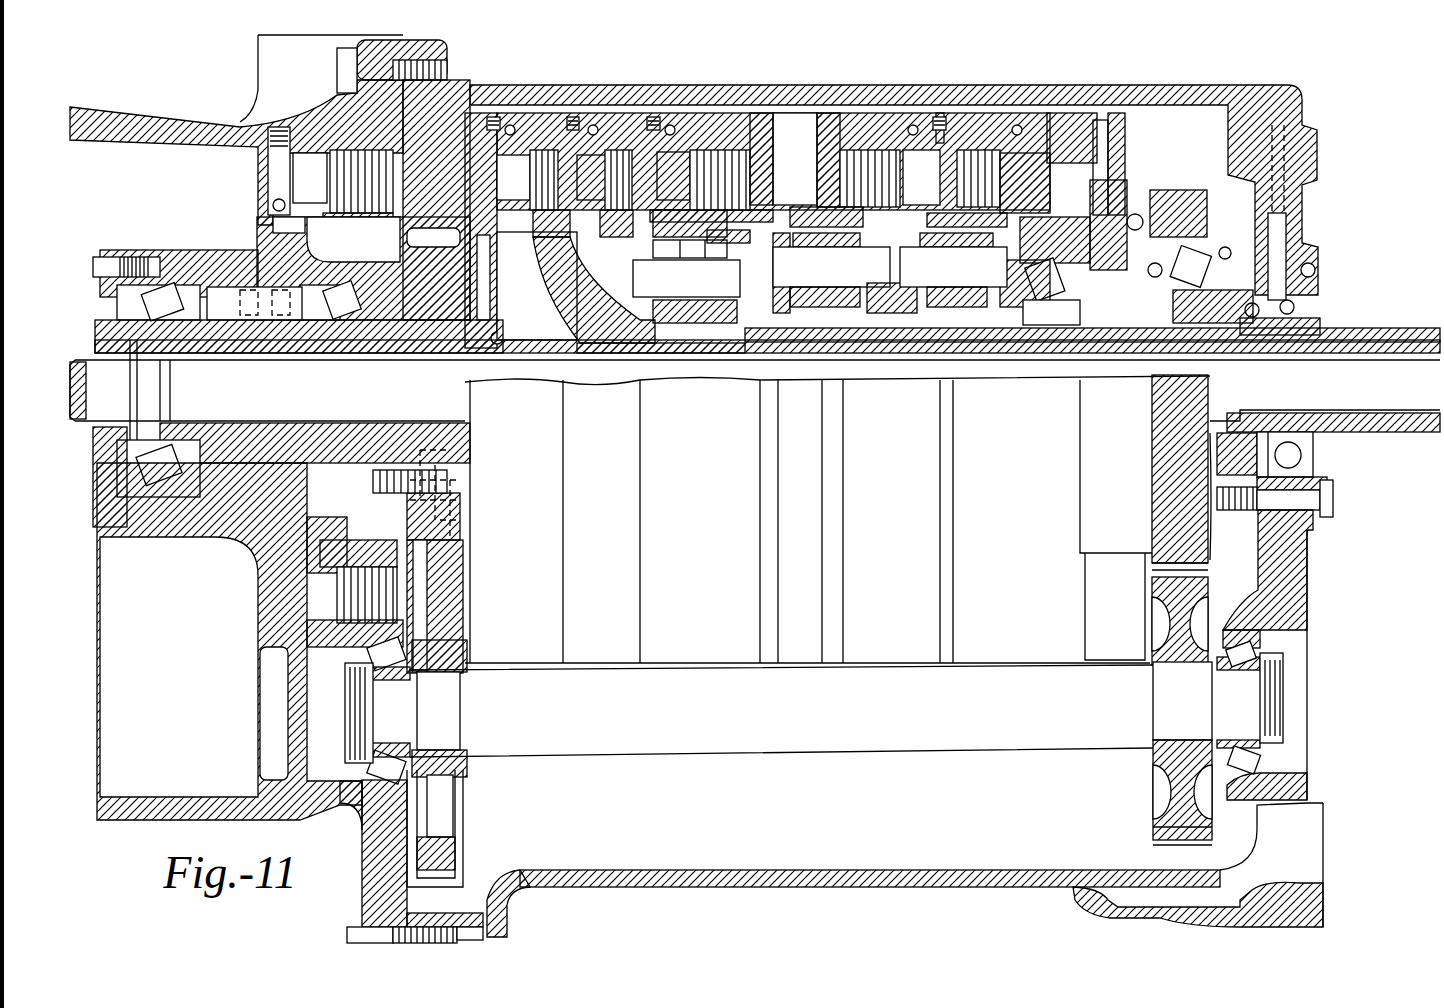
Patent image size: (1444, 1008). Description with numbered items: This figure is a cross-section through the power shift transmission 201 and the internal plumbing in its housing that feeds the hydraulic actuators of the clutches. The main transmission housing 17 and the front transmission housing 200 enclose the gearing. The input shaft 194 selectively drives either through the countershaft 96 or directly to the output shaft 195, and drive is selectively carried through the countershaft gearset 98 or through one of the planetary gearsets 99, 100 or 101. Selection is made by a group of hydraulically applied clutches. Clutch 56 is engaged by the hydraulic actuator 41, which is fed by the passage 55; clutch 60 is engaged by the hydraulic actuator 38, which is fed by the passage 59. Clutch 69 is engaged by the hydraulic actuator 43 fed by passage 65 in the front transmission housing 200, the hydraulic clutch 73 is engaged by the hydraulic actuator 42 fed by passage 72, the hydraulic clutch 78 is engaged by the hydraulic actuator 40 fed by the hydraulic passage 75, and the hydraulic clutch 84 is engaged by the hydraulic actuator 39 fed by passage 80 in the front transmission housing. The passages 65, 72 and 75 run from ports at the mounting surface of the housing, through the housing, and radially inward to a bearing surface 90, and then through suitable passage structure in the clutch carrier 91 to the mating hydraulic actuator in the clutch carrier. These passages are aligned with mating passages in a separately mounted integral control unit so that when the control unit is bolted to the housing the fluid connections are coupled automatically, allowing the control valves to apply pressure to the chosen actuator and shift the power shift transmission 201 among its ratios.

The main transmission housing 17 is at (1322, 905).
The hydraulic actuator 38 is at (1106, 260).
The hydraulic actuator 39 is at (266, 178).
The hydraulic actuator 40 is at (690, 142).
The hydraulic actuator 41 is at (873, 140).
The hydraulic actuator 42 is at (597, 207).
The hydraulic actuator 43 is at (520, 214).
The passage 55 is at (945, 140).
The clutch 56 is at (875, 143).
The passage 59 is at (1105, 160).
The clutch 60 is at (981, 133).
The passage 65 is at (207, 290).
The clutch 69 is at (548, 228).
The passage 72 is at (227, 290).
The hydraulic clutch 73 is at (621, 232).
The hydraulic passage 75 is at (290, 296).
The hydraulic clutch 78 is at (764, 163).
The passage 80 is at (278, 128).
The hydraulic clutch 84 is at (330, 150).
The bearing surface 90 is at (253, 440).
The clutch carrier 91 is at (724, 117).
The countershaft 96 is at (582, 750).
The countershaft gearset 98 is at (478, 565).
The planetary gearset 99 is at (690, 362).
The planetary gearset 100 is at (832, 345).
The planetary gearset 101 is at (975, 345).
The input shaft 194 is at (318, 407).
The output shaft 195 is at (1377, 398).
The front transmission housing 200 is at (362, 918).
The power shift transmission 201 is at (1256, 84).